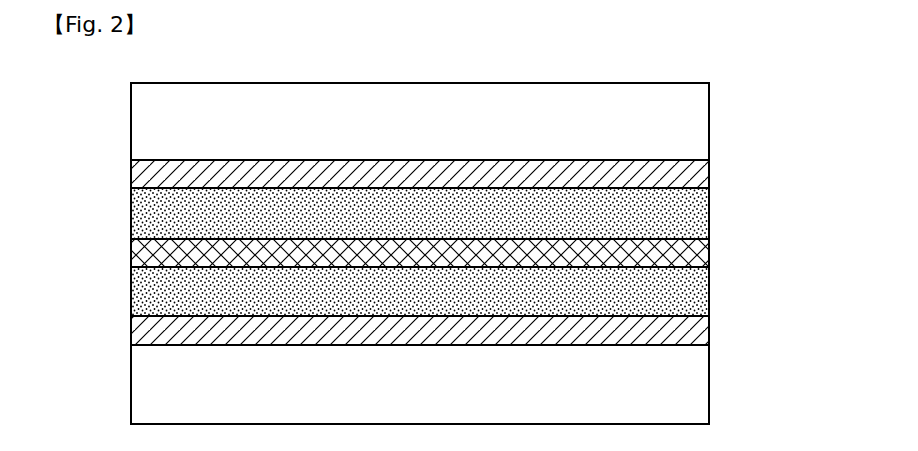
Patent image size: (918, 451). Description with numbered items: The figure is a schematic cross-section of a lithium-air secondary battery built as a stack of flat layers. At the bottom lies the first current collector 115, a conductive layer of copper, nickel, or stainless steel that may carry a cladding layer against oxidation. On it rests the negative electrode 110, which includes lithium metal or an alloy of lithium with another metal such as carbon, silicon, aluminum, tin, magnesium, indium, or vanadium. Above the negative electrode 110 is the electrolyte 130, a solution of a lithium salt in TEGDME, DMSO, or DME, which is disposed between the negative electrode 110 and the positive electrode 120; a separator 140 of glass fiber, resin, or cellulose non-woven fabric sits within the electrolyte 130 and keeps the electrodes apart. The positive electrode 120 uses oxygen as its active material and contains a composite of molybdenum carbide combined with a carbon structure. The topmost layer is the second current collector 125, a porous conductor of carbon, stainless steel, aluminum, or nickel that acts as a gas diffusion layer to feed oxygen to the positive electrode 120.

The second current collector 125 is at (703, 122).
The positive electrode 120 is at (703, 172).
The electrolyte 130 is at (700, 214).
The separator 140 is at (703, 254).
The negative electrode 110 is at (700, 329).
The first current collector 115 is at (700, 383).